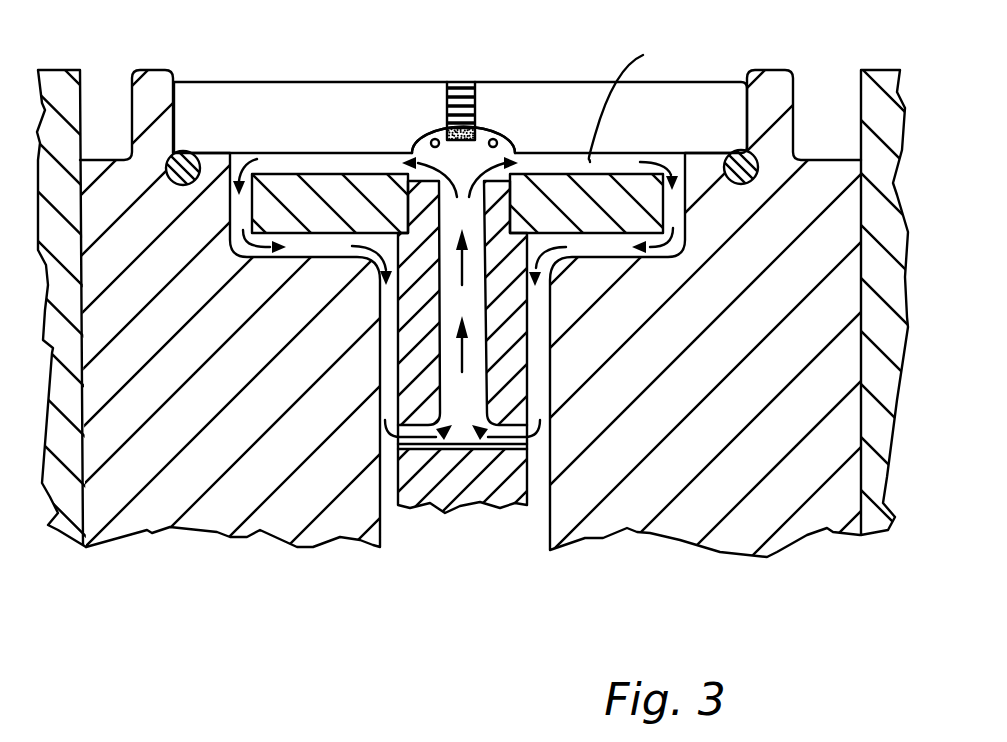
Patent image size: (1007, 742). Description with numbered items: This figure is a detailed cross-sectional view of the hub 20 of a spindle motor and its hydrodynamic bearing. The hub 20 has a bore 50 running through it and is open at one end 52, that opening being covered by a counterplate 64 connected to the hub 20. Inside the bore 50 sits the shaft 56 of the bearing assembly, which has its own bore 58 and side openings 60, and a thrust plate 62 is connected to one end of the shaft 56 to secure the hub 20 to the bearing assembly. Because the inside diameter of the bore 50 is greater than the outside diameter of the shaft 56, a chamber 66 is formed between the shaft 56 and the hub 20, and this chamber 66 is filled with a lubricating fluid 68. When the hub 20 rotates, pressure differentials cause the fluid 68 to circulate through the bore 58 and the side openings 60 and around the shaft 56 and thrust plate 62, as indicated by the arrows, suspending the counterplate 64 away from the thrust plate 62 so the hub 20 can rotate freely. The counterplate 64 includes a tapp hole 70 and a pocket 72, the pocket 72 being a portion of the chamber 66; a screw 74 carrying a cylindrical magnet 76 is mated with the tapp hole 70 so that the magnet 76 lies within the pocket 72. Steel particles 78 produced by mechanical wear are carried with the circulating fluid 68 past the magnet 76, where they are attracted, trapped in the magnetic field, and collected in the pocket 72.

The hub 20 is at (809, 150).
The bore 50 is at (548, 518).
The open end 52 is at (240, 158).
The shaft 56 is at (505, 318).
The bore 58 is at (463, 305).
The side openings 60 is at (405, 447).
The thrust plate 62 is at (352, 200).
The counterplate 64 is at (197, 82).
The chamber 66 is at (656, 300).
The lubricating fluid 68 is at (658, 163).
The tapp hole 70 is at (477, 85).
The pocket 72 is at (513, 147).
The screw 74 is at (458, 82).
The magnet 76 is at (440, 128).
The steel particles 78 is at (495, 138).